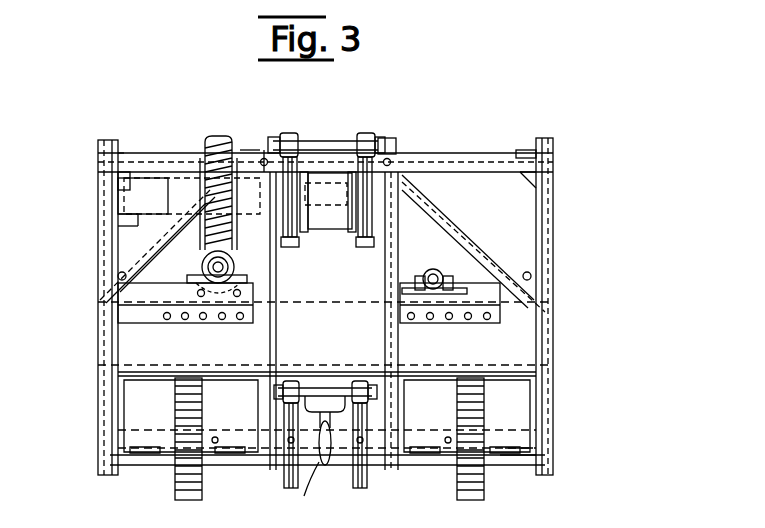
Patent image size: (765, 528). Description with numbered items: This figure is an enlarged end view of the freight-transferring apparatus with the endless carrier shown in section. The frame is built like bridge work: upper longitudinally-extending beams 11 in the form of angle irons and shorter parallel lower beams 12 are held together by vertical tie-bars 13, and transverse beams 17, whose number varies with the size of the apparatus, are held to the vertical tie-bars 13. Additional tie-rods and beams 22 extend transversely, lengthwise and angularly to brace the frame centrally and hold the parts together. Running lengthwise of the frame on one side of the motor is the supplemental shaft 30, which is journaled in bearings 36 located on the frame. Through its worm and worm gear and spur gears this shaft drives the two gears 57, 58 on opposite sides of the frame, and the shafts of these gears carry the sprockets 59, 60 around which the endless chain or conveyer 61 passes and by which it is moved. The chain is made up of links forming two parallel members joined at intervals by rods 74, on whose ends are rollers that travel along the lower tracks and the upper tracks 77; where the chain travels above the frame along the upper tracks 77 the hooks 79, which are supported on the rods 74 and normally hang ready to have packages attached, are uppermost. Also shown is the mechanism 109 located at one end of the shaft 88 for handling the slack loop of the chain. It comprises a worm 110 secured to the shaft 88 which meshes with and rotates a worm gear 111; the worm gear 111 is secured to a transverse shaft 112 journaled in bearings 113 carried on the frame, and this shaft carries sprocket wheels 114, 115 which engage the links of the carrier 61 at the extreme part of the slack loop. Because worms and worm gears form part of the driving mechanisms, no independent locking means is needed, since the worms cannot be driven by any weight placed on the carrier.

The upper longitudinally-extending beams 11 is at (526, 152).
The lower beams 12 is at (528, 460).
The vertical tie-bars 13 is at (100, 330).
The transverse beams 17 is at (325, 321).
The tie-rods and beams 22 is at (466, 224).
The supplemental shaft 30 is at (424, 272).
The bearings 36 is at (456, 282).
The gear 57 is at (466, 502).
The gear 58 is at (190, 502).
The sprocket 59 is at (362, 486).
The sprocket 60 is at (296, 484).
The endless chain or conveyer 61 is at (290, 146).
The rods 74 is at (335, 438).
The upper tracks 77 is at (378, 140).
The hooks 79 is at (319, 480).
The shaft 88 is at (200, 267).
The mechanism 109 is at (250, 127).
The worm 110 is at (170, 258).
The worm gear 111 is at (214, 140).
The transverse shaft 112 is at (178, 195).
The bearings 113 is at (128, 180).
The sprocket wheel 114 is at (325, 211).
The sprocket wheel 115 is at (362, 248).